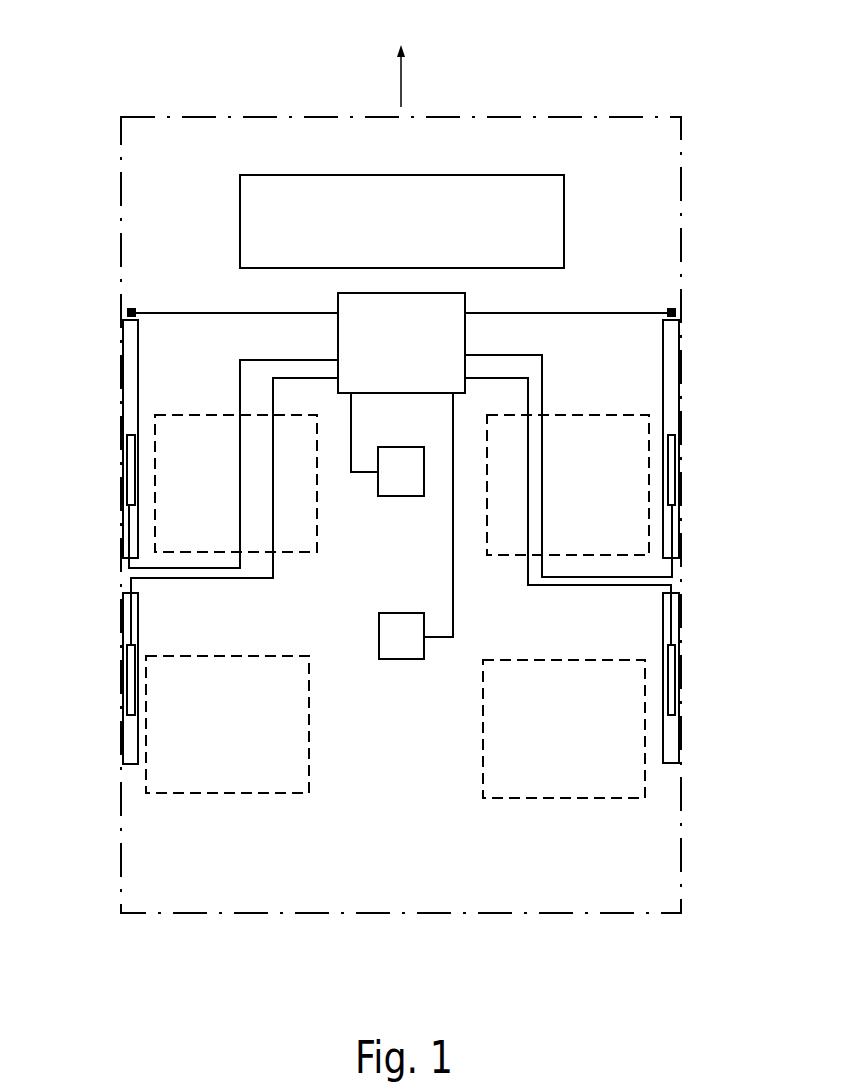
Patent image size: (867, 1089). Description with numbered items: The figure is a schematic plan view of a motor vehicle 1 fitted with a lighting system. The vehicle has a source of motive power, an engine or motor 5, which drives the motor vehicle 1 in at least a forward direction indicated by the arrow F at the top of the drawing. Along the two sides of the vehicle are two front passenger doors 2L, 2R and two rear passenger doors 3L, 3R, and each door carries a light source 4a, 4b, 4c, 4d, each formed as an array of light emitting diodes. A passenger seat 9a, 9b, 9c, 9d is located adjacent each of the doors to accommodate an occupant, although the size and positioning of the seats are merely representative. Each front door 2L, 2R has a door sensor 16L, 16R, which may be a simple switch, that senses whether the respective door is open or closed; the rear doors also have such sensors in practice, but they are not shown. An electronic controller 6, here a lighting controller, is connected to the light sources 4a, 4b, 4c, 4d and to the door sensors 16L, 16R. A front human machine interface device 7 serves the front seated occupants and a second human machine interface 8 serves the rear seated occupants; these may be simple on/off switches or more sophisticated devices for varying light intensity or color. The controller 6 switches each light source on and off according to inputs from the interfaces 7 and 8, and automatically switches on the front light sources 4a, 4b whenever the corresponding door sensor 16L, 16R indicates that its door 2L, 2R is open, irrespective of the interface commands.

The motor vehicle 1 is at (231, 112).
The forward direction arrow F is at (400, 63).
The engine or motor 5 is at (394, 234).
The electronic controller 6 is at (394, 355).
The front human machine interface device 7 is at (394, 483).
The second human machine interface 8 is at (394, 648).
The door sensor 16L is at (129, 305).
The door sensor 16R is at (674, 305).
The front passenger door 2L is at (123, 368).
The front passenger door 2R is at (679, 368).
The rear passenger door 3L is at (123, 738).
The rear passenger door 3R is at (679, 738).
The light source 4a is at (127, 465).
The light source 4b is at (679, 465).
The light source 4c is at (123, 680).
The light source 4d is at (679, 680).
The passenger seat 9a is at (155, 508).
The passenger seat 9b is at (649, 508).
The passenger seat 9c is at (146, 785).
The passenger seat 9d is at (645, 785).